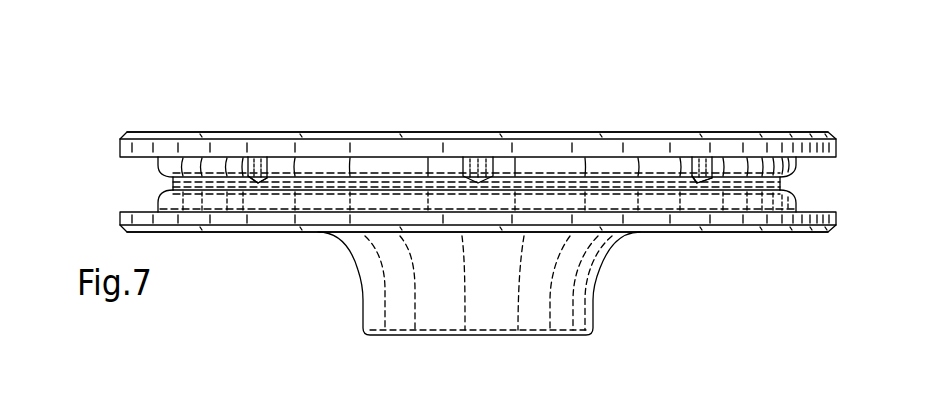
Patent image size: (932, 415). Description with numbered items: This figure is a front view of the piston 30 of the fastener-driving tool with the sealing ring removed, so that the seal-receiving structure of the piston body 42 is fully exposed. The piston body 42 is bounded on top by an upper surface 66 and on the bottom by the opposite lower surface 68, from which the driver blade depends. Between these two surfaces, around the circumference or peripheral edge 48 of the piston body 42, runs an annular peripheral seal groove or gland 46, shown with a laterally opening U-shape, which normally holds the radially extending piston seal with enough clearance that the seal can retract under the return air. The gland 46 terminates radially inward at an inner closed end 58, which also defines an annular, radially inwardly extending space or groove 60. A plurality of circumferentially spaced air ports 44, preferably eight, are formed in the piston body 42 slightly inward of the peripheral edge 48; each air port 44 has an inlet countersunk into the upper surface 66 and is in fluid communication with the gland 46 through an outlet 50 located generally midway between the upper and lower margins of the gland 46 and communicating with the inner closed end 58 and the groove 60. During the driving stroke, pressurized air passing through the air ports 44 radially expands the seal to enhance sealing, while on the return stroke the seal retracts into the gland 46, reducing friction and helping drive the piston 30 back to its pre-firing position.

The piston 30 is at (748, 90).
The piston body 42 is at (573, 258).
The air port 44 is at (253, 158).
The gland 46 is at (158, 212).
The peripheral edge 48 is at (119, 142).
The outlet 50 is at (256, 183).
The inner closed end 58 is at (157, 163).
The groove 60 is at (173, 183).
The upper surface 66 is at (603, 131).
The lower surface 68 is at (792, 233).